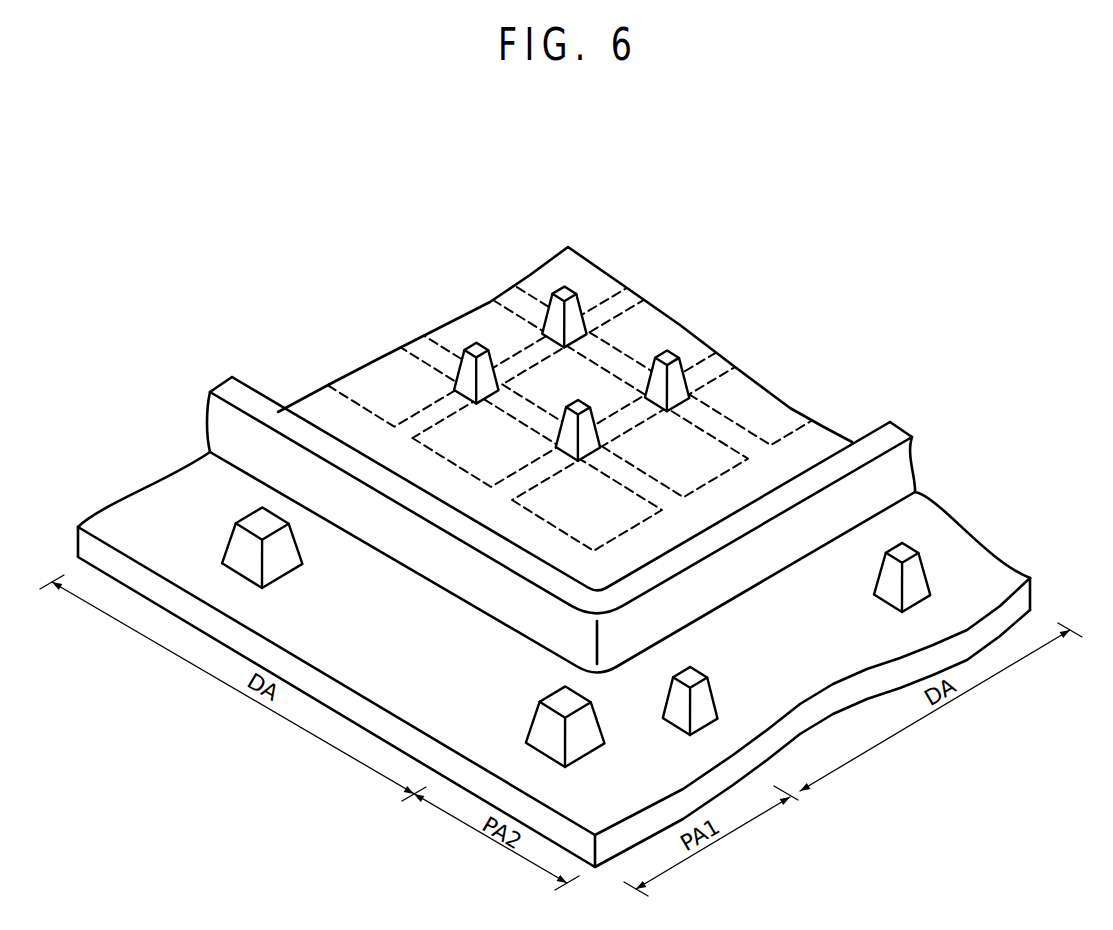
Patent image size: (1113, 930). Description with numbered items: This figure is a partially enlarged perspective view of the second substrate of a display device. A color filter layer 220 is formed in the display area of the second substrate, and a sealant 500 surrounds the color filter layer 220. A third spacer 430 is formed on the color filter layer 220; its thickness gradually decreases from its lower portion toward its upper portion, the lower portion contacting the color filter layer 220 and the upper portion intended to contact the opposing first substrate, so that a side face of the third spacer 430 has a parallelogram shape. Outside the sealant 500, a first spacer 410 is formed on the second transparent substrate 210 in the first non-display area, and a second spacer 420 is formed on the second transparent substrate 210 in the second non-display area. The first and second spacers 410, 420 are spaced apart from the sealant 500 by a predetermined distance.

The second transparent substrate 210 is at (968, 543).
The color filter layer 220 is at (813, 436).
The first spacer 410 is at (258, 520).
The second spacer 420 is at (908, 581).
The third spacer 430 is at (562, 297).
The sealant 500 is at (890, 432).